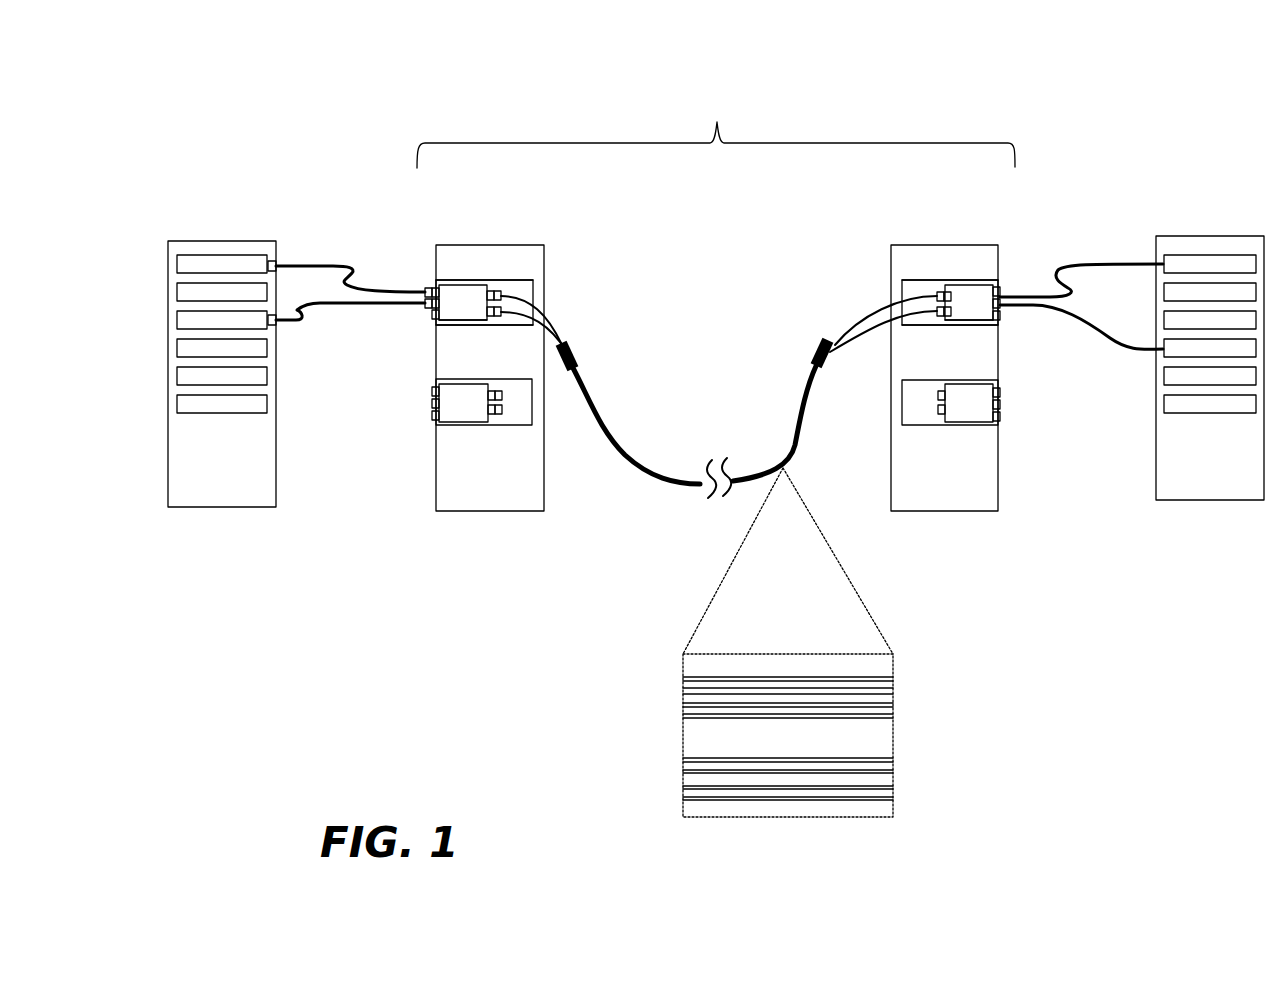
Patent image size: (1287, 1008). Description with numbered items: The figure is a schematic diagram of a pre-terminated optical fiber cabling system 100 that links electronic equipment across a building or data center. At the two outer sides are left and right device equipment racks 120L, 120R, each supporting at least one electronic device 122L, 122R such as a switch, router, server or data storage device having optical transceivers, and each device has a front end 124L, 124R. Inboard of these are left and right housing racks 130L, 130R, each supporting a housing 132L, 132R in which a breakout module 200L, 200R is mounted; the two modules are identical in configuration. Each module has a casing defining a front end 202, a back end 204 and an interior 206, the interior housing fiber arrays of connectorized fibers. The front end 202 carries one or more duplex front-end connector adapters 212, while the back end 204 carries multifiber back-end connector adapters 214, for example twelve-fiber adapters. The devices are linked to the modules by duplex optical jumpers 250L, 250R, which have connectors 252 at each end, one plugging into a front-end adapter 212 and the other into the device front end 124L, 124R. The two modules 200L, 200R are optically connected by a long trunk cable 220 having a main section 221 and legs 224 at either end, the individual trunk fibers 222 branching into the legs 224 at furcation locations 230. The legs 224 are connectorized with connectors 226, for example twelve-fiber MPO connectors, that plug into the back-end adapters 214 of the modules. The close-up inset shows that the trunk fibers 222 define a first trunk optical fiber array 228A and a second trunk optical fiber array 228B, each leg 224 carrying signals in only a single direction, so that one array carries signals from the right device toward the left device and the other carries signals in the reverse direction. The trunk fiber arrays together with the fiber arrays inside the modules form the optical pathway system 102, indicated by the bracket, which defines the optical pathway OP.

The pre-terminated optical fiber cabling system 100 is at (287, 113).
The optical pathway system 102 is at (716, 130).
The left device equipment rack 120L is at (247, 482).
The right device equipment rack 120R is at (1240, 474).
The left electronic device 122L is at (222, 255).
The right electronic device 122R is at (1210, 283).
The front end of left electronic device 124L is at (268, 405).
The front end of right electronic device 124R is at (1163, 405).
The left housing rack 130L is at (520, 482).
The right housing rack 130R is at (970, 482).
The left housing 132L is at (517, 280).
The right housing 132R is at (928, 280).
The left breakout module 200L is at (455, 282).
The right breakout module 200R is at (978, 283).
The front end 202 is at (424, 275).
The back end 204 is at (533, 281).
The interior 206 is at (422, 330).
The front-end connector adapters 212 is at (462, 320).
The back-end connector adapters 214 is at (483, 285).
The trunk cable 220 is at (680, 490).
The main section 221 is at (600, 430).
The trunk fibers 222 is at (852, 775).
The legs 224 is at (502, 313).
The connectors 226 is at (493, 320).
The first trunk optical fiber array 228A is at (676, 675).
The second trunk optical fiber array 228B is at (676, 757).
The furcation locations 230 is at (580, 352).
The left jumpers 250L is at (342, 268).
The right jumpers 250R is at (1125, 267).
The connectors 252 is at (272, 260).